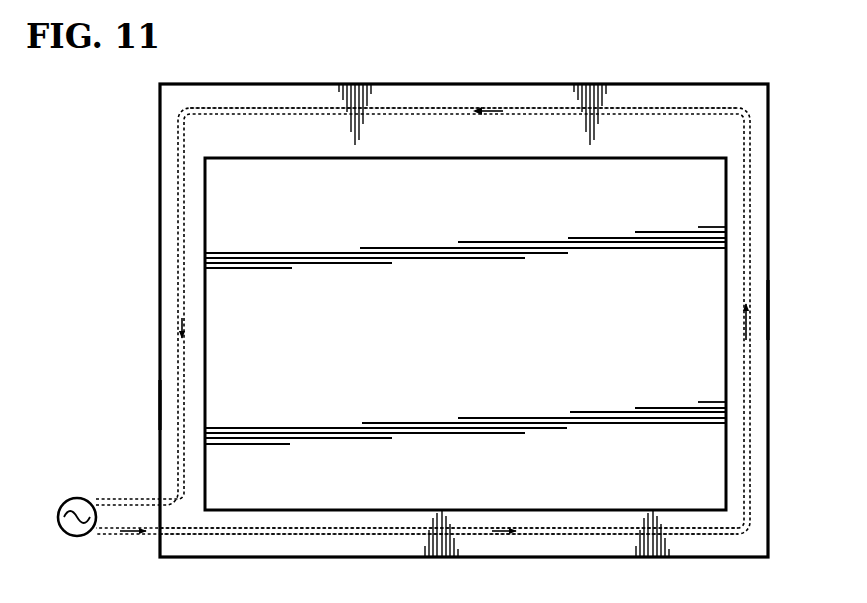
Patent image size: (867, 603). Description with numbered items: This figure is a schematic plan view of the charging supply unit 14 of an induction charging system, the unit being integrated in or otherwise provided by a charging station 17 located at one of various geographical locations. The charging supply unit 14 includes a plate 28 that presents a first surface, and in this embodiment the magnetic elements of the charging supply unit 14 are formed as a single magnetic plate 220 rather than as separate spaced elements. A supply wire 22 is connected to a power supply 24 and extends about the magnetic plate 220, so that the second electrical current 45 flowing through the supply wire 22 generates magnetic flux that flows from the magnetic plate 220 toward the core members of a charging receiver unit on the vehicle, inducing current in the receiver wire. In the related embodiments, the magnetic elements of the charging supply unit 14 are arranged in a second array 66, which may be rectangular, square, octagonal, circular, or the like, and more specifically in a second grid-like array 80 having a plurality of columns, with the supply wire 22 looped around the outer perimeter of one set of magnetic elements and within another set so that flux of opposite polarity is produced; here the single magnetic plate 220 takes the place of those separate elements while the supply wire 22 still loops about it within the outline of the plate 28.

The charging supply unit 14 is at (773, 98).
The charging station 17 is at (334, 537).
The supply wire 22 is at (173, 256).
The power supply 24 is at (80, 498).
The plate 28 is at (205, 97).
The second electrical current 45 is at (179, 328).
The second array 66 is at (146, 405).
The second grid-like array 80 is at (773, 313).
The magnetic plate 220 is at (481, 345).